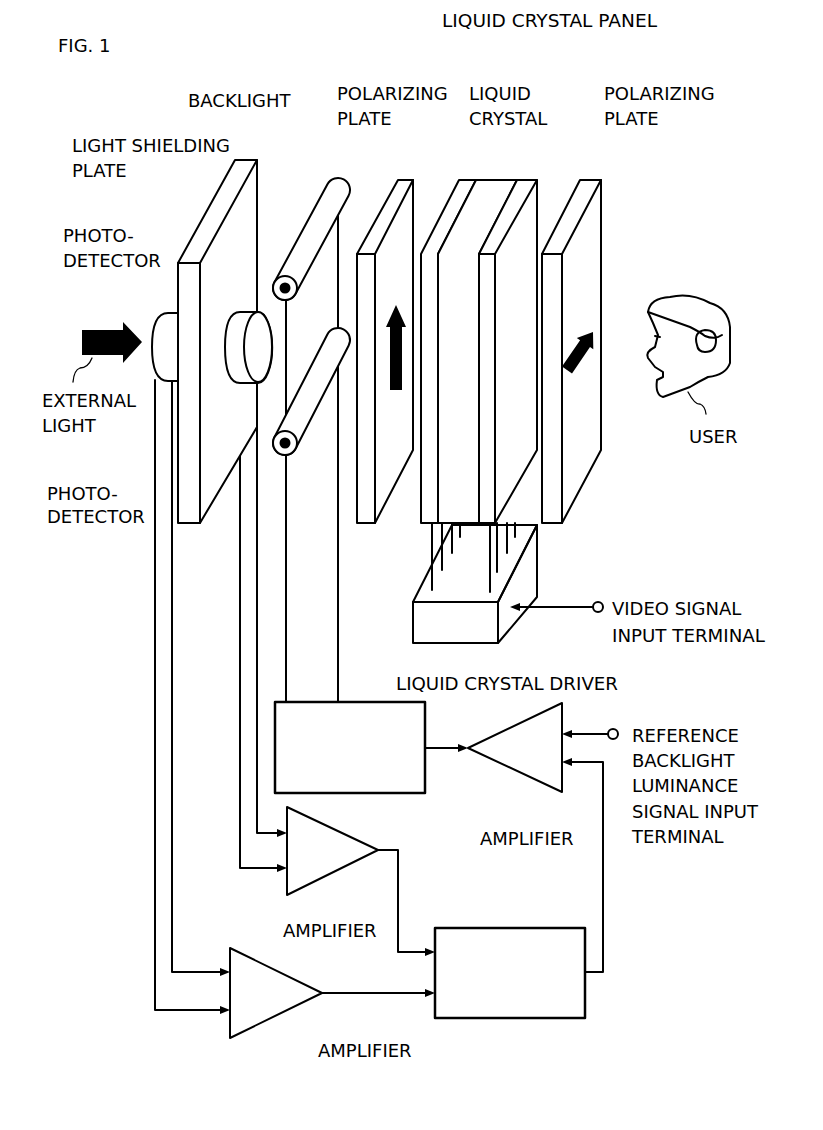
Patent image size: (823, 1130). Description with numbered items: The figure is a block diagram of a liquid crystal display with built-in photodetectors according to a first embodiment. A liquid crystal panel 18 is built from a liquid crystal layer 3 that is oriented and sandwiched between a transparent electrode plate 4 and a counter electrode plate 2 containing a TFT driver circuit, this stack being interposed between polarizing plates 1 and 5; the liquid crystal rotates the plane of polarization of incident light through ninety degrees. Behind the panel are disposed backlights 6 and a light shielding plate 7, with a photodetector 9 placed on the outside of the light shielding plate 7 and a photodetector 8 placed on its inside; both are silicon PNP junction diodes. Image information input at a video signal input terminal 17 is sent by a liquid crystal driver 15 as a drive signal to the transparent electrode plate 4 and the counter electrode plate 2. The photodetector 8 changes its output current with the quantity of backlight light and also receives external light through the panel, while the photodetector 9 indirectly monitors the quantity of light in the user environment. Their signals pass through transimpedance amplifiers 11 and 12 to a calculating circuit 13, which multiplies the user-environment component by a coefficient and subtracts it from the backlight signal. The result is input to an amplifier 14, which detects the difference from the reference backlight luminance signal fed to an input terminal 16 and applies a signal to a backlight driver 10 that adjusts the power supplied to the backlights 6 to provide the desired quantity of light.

The polarizing plate 1 is at (588, 181).
The counter electrode plate 2 is at (526, 330).
The liquid crystal layer 3 is at (498, 181).
The transparent electrode plate 4 is at (460, 182).
The polarizing plate 5 is at (393, 185).
The backlights 6 is at (322, 190).
The light shielding plate 7 is at (210, 205).
The photodetector 8 is at (201, 516).
The photodetector 9 is at (160, 316).
The backlight driver 10 is at (378, 794).
The amplifier 11 is at (325, 878).
The amplifier 12 is at (278, 1015).
The calculating circuit 13 is at (516, 1018).
The amplifier 14 is at (522, 777).
The liquid crystal driver 15 is at (513, 632).
The input terminal 16 is at (617, 729).
The video signal input terminal 17 is at (601, 602).
The liquid crystal panel 18 is at (524, 278).